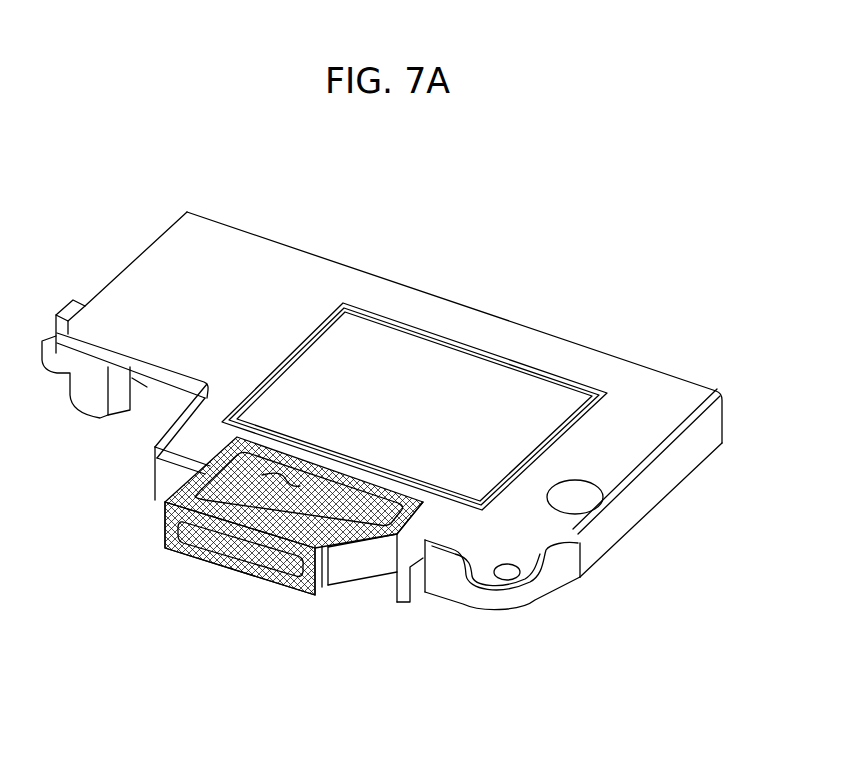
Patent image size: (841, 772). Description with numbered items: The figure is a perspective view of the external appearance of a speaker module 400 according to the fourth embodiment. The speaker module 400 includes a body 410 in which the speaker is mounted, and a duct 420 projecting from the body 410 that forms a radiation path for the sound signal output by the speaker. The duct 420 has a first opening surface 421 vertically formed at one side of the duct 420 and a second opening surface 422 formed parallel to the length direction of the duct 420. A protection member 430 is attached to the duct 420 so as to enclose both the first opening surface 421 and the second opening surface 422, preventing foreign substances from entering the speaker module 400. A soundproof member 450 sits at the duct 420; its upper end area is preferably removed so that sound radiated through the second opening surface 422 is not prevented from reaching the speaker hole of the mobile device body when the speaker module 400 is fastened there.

The speaker module 400 is at (542, 283).
The body 410 is at (642, 372).
The duct 420 is at (360, 567).
The first opening surface 421 is at (198, 535).
The second opening surface 422 is at (257, 484).
The protection member 430 is at (182, 485).
The soundproof member 450 is at (323, 592).